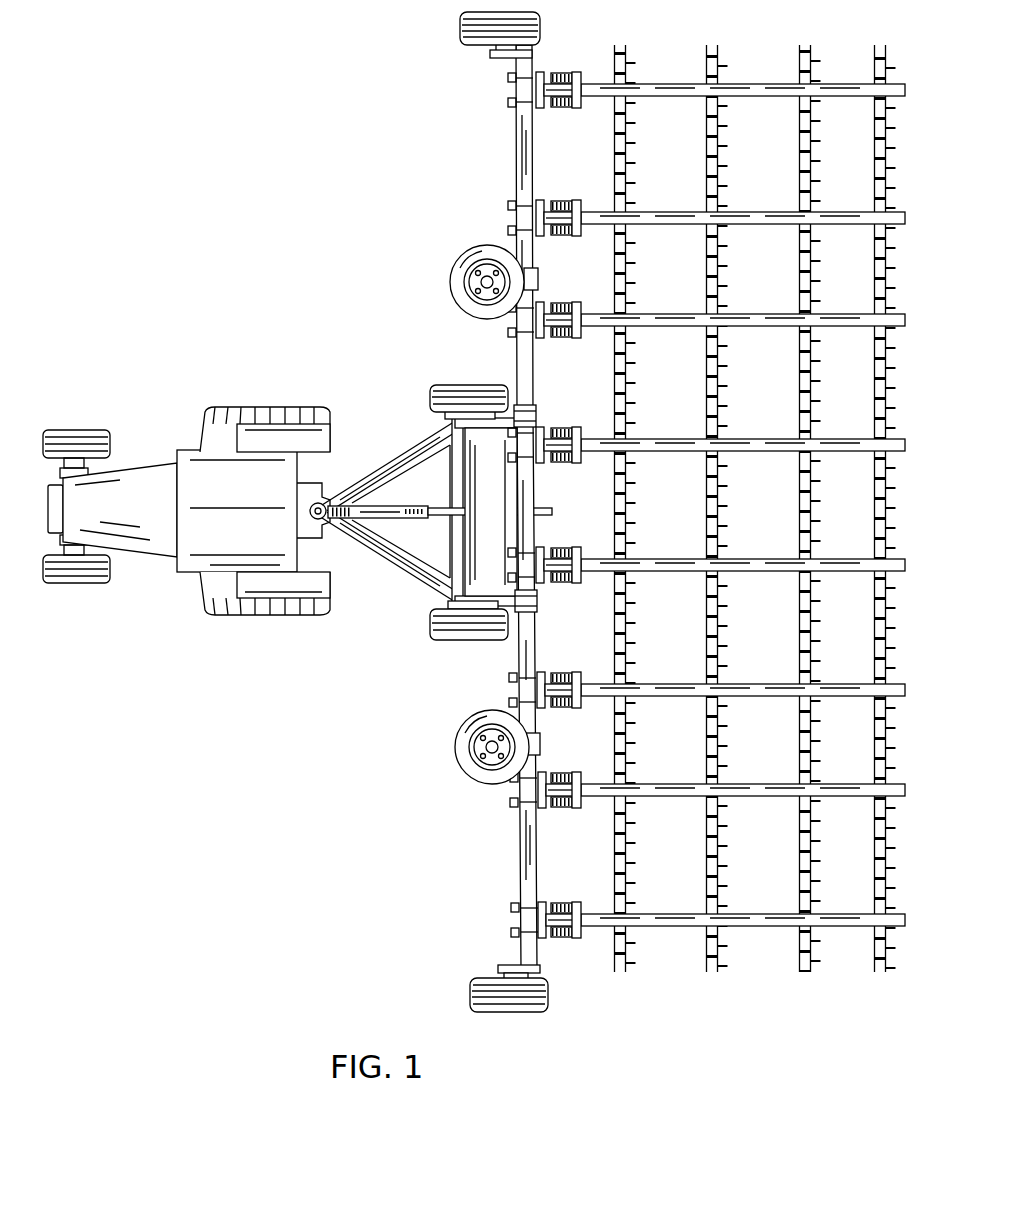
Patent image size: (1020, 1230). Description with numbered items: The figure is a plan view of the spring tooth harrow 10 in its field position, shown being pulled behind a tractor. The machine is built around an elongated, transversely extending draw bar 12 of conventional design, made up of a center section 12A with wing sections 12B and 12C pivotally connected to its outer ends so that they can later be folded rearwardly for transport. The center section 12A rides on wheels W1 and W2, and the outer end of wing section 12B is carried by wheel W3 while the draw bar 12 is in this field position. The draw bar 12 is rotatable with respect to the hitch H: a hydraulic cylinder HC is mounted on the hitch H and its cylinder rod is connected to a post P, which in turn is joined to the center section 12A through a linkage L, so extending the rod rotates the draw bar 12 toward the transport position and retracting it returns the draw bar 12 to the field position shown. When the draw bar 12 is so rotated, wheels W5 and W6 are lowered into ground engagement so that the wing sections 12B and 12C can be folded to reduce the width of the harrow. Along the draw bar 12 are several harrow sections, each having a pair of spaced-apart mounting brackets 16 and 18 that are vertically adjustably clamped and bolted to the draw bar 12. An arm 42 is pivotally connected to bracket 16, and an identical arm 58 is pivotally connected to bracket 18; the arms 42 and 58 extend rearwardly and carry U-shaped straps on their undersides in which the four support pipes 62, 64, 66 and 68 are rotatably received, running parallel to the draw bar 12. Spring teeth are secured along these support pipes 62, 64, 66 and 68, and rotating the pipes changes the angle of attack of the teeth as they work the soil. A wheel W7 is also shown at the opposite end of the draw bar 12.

The spring tooth harrow 10 is at (469, 506).
The draw bar 12 is at (469, 506).
The center section 12A is at (522, 416).
The wing section 12B is at (516, 882).
The wing section 12C is at (508, 178).
The mounting bracket 16 is at (554, 71).
The mounting bracket 18 is at (552, 209).
The arm 42 is at (737, 88).
The arm 58 is at (766, 226).
The support pipe 62 is at (628, 160).
The support pipe 64 is at (720, 128).
The support pipe 66 is at (798, 178).
The support pipe 68 is at (872, 158).
The hitch H is at (408, 447).
The hydraulic cylinder HC is at (414, 528).
The post P is at (336, 505).
The linkage L is at (505, 500).
The wheel W1 is at (432, 634).
The wheel W2 is at (430, 394).
The wheel W3 is at (468, 994).
The wheel W5 is at (455, 752).
The wheel W6 is at (450, 283).
The wheel W7 is at (460, 27).